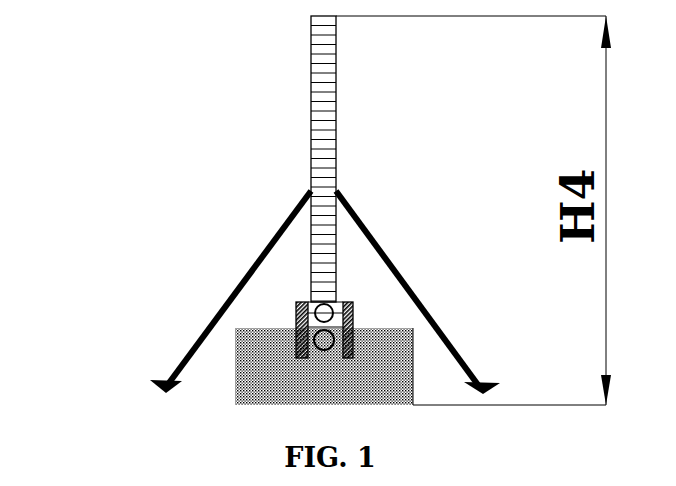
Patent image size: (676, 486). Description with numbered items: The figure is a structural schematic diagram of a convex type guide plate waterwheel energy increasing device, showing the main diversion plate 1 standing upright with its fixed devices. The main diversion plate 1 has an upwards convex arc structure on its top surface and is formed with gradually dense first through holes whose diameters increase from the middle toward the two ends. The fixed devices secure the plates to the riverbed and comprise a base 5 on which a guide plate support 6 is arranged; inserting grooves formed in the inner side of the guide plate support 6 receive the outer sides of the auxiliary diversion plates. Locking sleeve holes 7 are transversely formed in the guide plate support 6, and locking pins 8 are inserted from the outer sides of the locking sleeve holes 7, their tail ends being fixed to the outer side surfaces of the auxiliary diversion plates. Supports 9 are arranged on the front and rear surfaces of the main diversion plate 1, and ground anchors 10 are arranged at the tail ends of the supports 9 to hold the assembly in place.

The main diversion plate 1 is at (259, 159).
The base 5 is at (260, 319).
The guide plate support 6 is at (457, 355).
The locking sleeve holes 7 is at (387, 281).
The locking pins 8 is at (389, 316).
The supports 9 is at (306, 284).
The ground anchors 10 is at (272, 349).